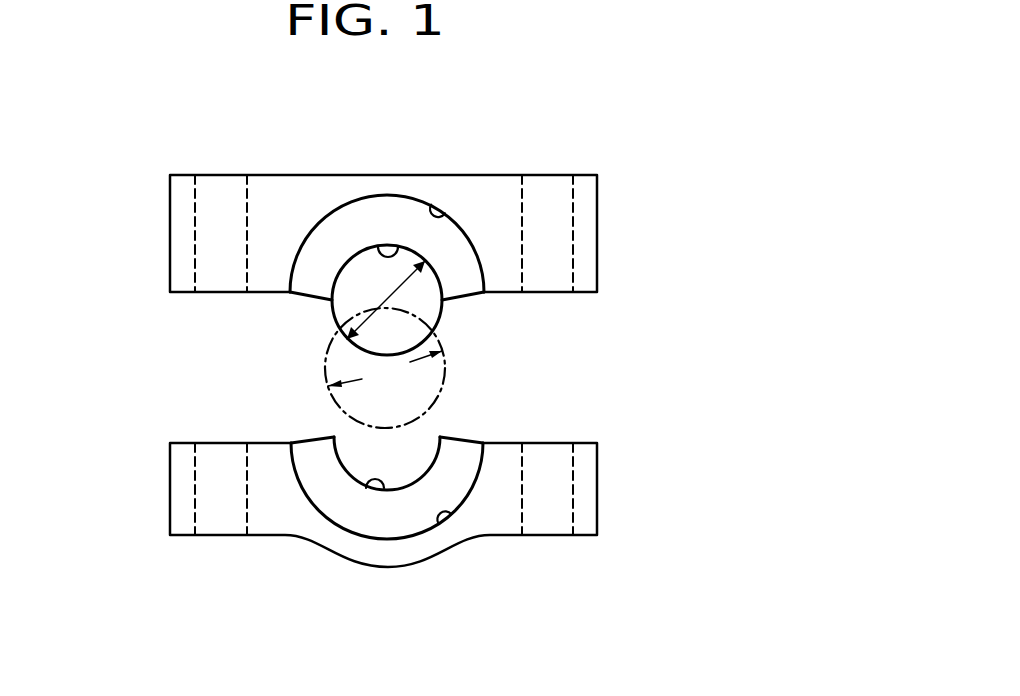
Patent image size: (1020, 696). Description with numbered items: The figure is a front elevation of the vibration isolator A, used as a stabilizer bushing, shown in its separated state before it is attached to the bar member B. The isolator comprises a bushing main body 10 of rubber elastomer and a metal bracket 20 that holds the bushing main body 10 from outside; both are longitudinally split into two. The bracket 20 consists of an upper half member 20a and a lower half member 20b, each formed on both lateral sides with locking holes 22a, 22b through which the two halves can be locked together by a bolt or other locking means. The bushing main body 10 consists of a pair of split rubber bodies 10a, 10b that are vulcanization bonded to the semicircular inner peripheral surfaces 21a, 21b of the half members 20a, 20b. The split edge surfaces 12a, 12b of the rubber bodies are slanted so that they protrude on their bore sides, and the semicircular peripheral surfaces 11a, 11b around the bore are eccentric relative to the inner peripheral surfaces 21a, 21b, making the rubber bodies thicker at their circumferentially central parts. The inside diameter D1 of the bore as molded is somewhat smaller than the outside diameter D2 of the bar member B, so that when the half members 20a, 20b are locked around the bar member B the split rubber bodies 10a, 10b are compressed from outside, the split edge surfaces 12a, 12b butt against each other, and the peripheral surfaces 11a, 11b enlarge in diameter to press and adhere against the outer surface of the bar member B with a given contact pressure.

The vibration isolator A is at (622, 152).
The bushing main body 10 is at (95, 309).
The split rubber body 10a is at (307, 263).
The split rubber body 10b is at (307, 473).
The peripheral surface around the bore 11a is at (393, 250).
The peripheral surface around the bore 11b is at (382, 487).
The split edge surface 12a is at (314, 299).
The split edge surface 12b is at (313, 440).
The bracket 20 is at (721, 288).
The half member 20a is at (585, 268).
The half member 20b is at (597, 485).
The semicircular inner peripheral surface 21a is at (447, 212).
The semicircular inner peripheral surface 21b is at (452, 514).
The locking hole 22a is at (195, 217).
The locking hole 22b is at (195, 510).
The inside diameter of the bore D1 is at (387, 297).
The outside diameter of the bar member D2 is at (385, 372).
The bar member B is at (443, 370).